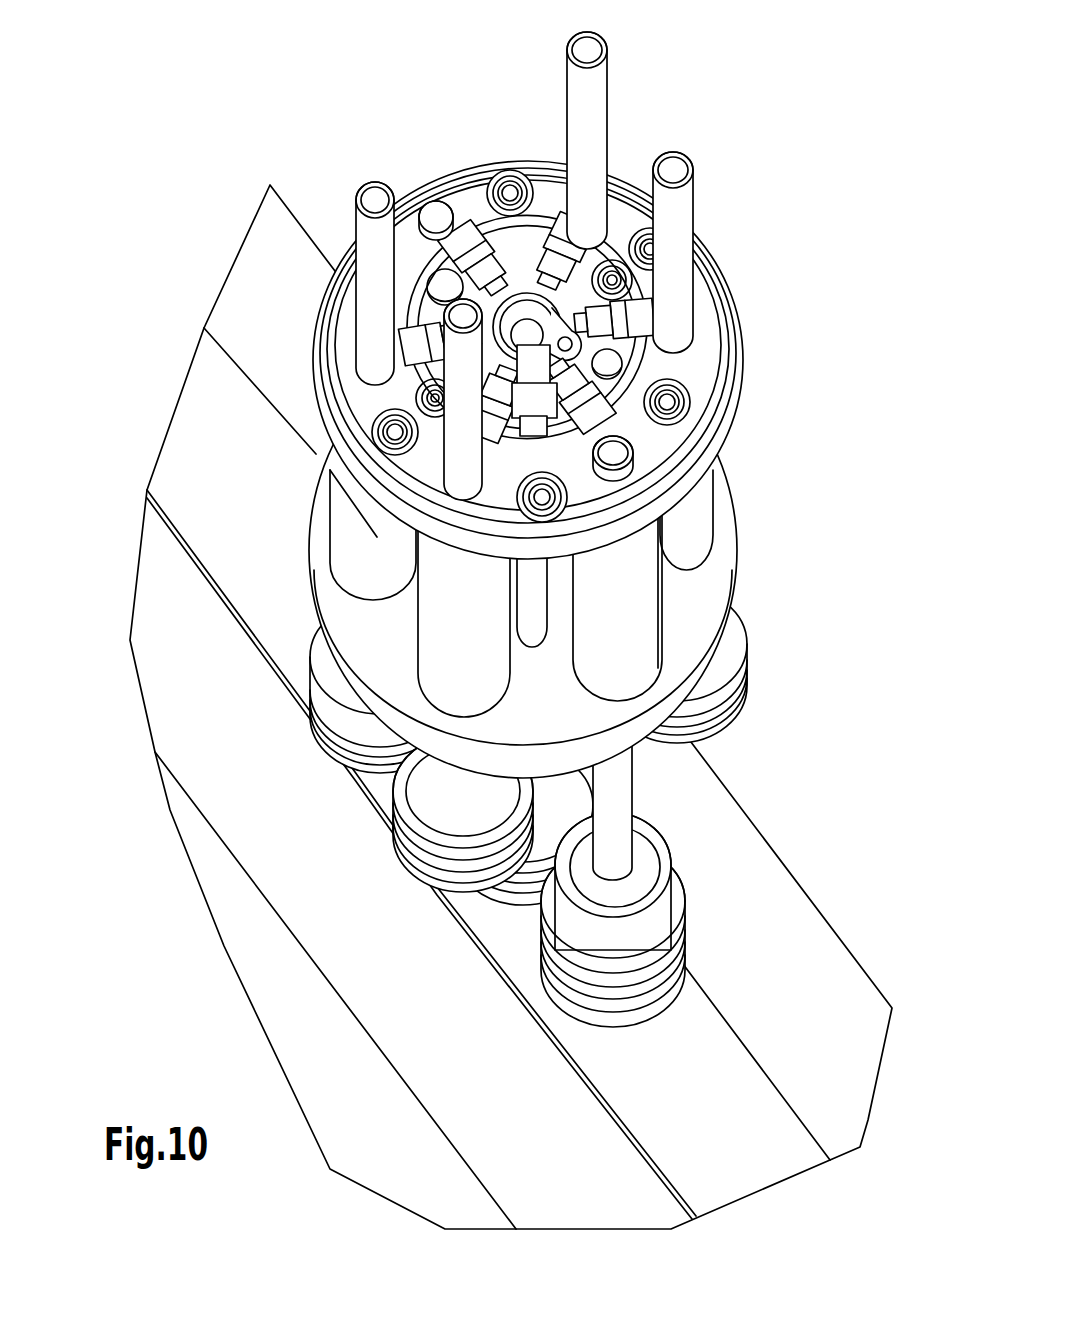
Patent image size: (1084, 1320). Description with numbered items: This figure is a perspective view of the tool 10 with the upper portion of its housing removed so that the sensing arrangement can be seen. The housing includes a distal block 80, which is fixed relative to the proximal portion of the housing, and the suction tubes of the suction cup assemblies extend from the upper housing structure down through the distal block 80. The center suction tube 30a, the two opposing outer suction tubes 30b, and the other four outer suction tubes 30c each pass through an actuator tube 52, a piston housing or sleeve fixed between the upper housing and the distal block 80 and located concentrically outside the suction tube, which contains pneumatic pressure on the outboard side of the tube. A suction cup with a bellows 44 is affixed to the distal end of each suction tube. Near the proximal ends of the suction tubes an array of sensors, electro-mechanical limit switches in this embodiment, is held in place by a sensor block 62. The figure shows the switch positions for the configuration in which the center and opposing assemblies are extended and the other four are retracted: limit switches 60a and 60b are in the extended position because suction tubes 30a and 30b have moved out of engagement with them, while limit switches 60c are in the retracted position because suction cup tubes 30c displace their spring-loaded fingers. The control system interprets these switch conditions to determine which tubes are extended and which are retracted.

The tool 10 is at (837, 41).
The suction tube 30a is at (521, 320).
The suction tube 30b is at (430, 210).
The suction tube 30c is at (590, 95).
The bellows 44 is at (747, 685).
The actuator tube 52 is at (459, 653).
The limit switch 60a is at (523, 433).
The limit switch 60b is at (473, 260).
The limit switch 60c is at (560, 247).
The sensor block 62 is at (627, 348).
The distal block 80 is at (544, 487).